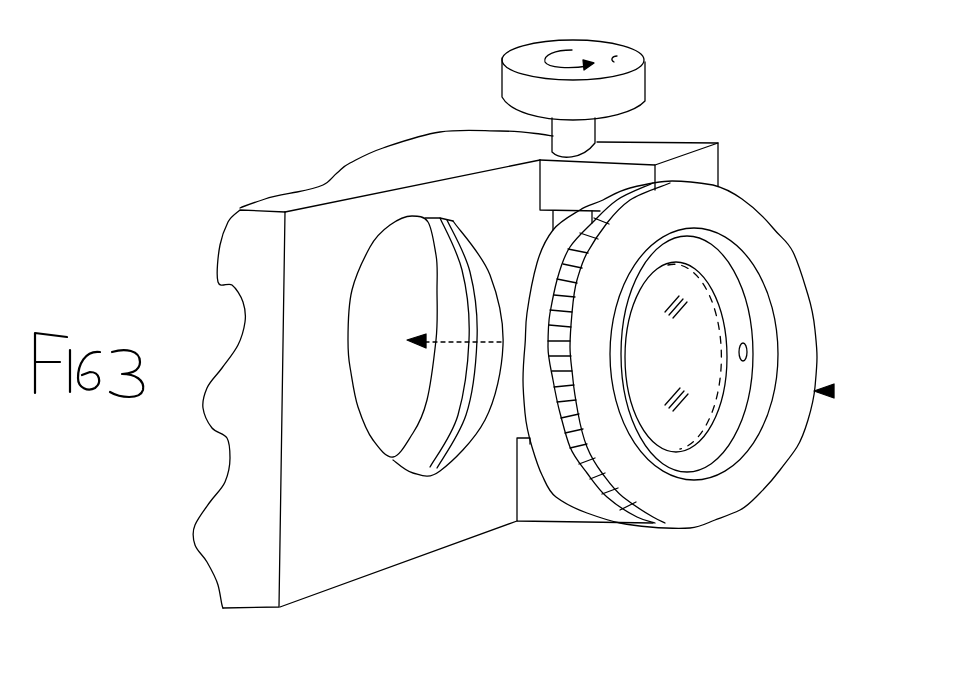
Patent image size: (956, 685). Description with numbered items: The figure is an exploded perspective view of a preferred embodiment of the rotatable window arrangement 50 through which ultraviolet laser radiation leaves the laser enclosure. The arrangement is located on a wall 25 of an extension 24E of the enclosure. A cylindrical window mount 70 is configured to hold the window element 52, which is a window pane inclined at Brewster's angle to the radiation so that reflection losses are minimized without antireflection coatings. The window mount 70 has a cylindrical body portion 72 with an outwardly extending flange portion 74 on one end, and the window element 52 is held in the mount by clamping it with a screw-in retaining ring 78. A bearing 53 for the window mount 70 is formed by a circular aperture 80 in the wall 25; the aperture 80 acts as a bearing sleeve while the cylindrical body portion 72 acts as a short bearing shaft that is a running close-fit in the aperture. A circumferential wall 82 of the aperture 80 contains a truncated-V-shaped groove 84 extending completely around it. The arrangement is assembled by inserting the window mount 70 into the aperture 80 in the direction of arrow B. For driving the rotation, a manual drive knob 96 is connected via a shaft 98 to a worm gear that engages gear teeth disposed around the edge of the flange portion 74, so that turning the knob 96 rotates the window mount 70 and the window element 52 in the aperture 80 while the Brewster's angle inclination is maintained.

The extension of enclosure 24E is at (393, 122).
The wall 25 is at (316, 557).
The rotatable window arrangement 50 is at (173, 473).
The window element 52 is at (705, 329).
The bearing 53 is at (390, 369).
The cylindrical window mount 70 is at (834, 391).
The cylindrical body portion 72 is at (563, 462).
The flange portion 74 is at (806, 314).
The screw-in retaining ring 78 is at (745, 425).
The circular aperture 80 is at (390, 288).
The circumferential wall 82 is at (440, 396).
The truncated-V-shaped groove 84 is at (500, 258).
The manual drive knob 96 is at (637, 80).
The shaft 98 is at (578, 146).
The arrow B is at (458, 334).